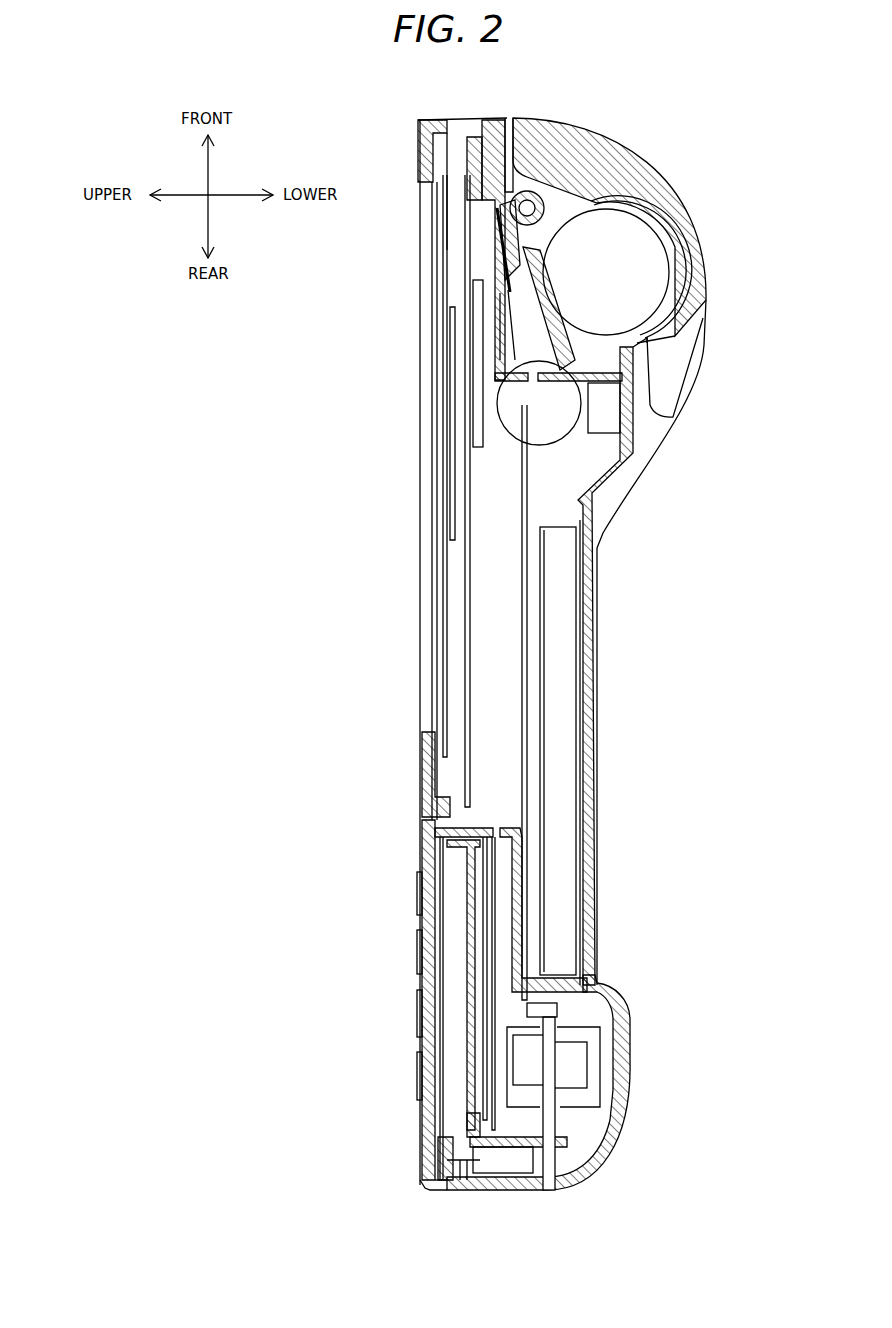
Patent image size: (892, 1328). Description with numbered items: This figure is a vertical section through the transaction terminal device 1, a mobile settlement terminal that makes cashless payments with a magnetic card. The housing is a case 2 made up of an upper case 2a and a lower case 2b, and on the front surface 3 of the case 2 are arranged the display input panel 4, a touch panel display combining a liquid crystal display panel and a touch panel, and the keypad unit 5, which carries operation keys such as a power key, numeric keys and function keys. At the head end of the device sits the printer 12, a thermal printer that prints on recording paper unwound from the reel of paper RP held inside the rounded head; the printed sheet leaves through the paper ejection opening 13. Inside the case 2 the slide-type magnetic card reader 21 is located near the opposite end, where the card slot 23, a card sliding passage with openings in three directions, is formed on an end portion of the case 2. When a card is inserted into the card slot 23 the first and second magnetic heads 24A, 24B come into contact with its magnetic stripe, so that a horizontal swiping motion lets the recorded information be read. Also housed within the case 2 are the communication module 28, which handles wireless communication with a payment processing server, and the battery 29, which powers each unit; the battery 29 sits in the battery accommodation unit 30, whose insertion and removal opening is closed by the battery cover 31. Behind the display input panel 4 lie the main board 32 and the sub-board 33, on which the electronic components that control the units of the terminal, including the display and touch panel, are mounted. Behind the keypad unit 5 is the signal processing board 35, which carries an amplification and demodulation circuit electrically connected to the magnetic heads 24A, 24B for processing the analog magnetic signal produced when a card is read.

The transaction terminal device 1 is at (730, 140).
The case 2 is at (330, 88).
The upper case 2a is at (420, 128).
The lower case 2b is at (480, 115).
The front surface 3 is at (422, 843).
The display input panel 4 is at (432, 397).
The keypad unit 5 is at (418, 1018).
The printer 12 is at (567, 207).
The paper ejection opening 13 is at (510, 115).
The magnetic card reader 21 is at (603, 1073).
The card slot 23 is at (553, 1197).
The first magnetic head 24A is at (540, 1052).
The second magnetic head 24B is at (568, 1065).
The communication module 28 is at (473, 322).
The battery 29 is at (577, 680).
The battery accommodation unit 30 is at (595, 738).
The battery cover 31 is at (595, 798).
The main board 32 is at (463, 573).
The sub-board 33 is at (523, 670).
The signal processing board 35 is at (495, 925).
The reel of paper RP is at (660, 262).